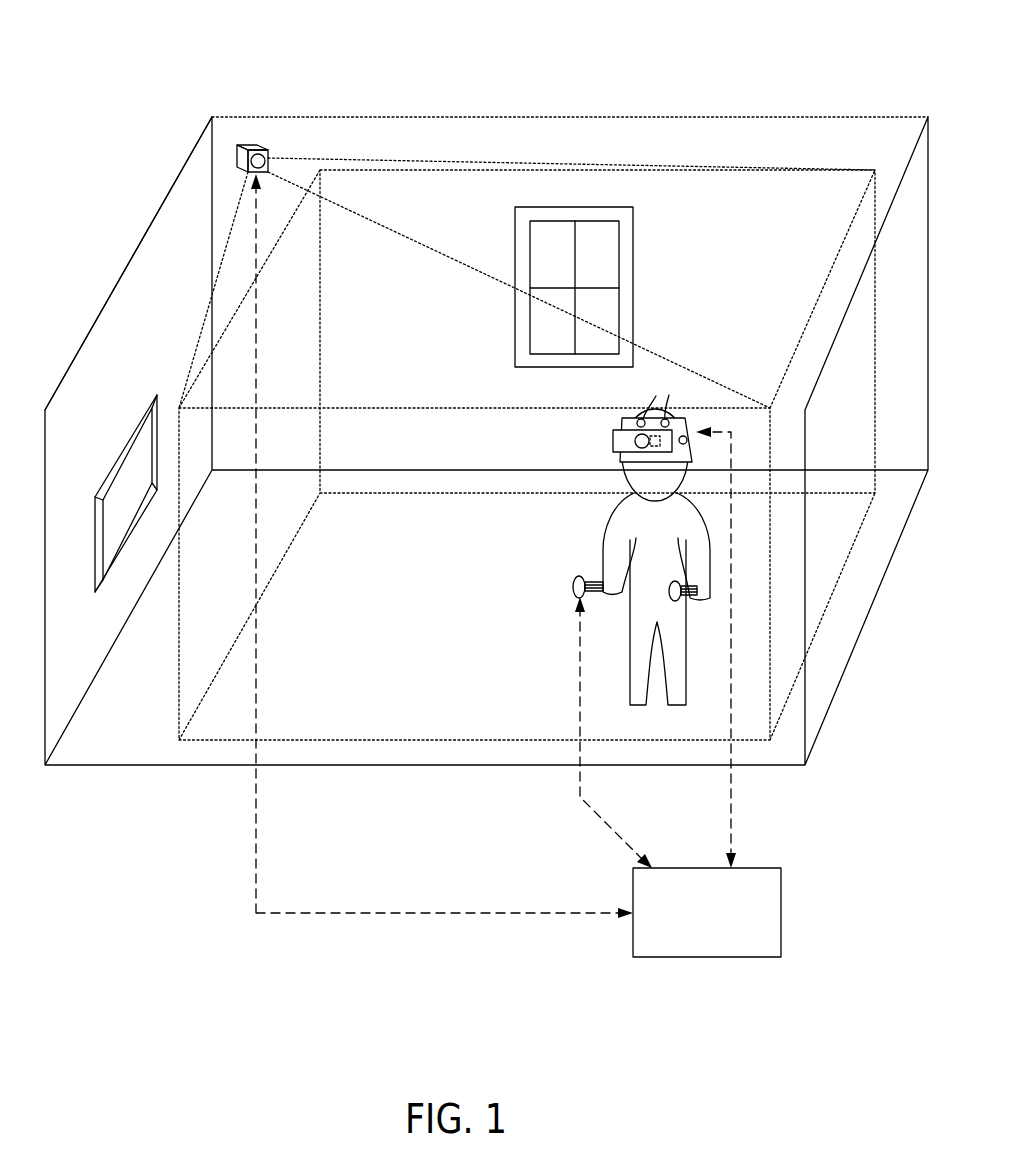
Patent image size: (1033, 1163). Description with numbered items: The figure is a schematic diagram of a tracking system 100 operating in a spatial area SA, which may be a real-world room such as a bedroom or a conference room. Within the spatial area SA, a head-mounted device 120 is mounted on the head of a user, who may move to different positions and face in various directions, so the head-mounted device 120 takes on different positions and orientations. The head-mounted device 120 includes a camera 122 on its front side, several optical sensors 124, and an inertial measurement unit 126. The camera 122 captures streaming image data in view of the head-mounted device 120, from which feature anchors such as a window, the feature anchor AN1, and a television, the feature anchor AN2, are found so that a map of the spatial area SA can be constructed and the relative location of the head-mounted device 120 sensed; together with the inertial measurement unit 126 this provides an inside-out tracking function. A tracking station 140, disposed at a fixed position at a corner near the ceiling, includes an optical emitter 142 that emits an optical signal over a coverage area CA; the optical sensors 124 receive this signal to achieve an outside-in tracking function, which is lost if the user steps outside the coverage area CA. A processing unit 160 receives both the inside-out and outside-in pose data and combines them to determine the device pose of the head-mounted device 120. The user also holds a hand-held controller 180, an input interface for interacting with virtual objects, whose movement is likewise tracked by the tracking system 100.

The tracking system 100 is at (738, 70).
The head-mounted device 120 is at (614, 436).
The camera 122 is at (634, 437).
The optical sensors 124 is at (661, 399).
The inertial measurement unit 126 is at (653, 447).
The tracking station 140 is at (508, 242).
The optical emitter 142 is at (250, 160).
The processing unit 160 is at (722, 958).
The hand-held controller 180 is at (575, 586).
The spatial area SA is at (137, 250).
The coverage area CA is at (502, 742).
The feature anchor AN1 is at (636, 233).
The feature anchor AN2 is at (137, 425).